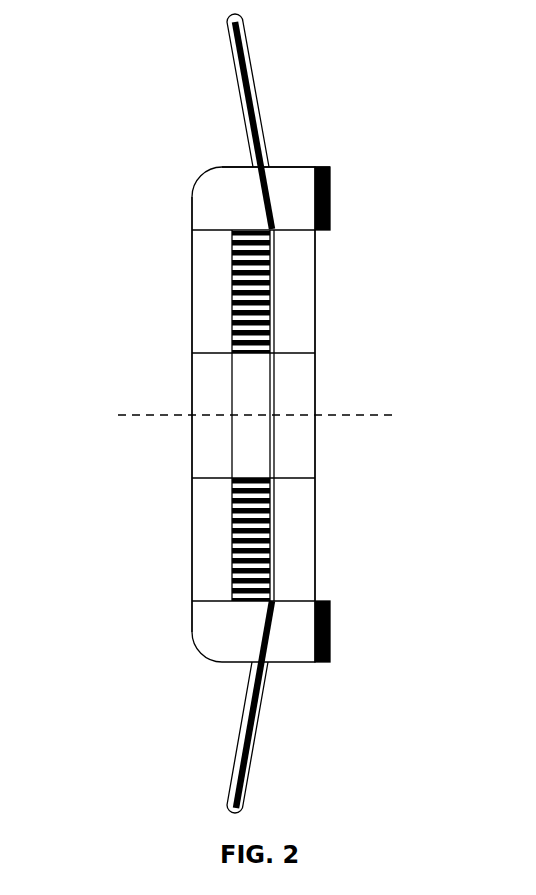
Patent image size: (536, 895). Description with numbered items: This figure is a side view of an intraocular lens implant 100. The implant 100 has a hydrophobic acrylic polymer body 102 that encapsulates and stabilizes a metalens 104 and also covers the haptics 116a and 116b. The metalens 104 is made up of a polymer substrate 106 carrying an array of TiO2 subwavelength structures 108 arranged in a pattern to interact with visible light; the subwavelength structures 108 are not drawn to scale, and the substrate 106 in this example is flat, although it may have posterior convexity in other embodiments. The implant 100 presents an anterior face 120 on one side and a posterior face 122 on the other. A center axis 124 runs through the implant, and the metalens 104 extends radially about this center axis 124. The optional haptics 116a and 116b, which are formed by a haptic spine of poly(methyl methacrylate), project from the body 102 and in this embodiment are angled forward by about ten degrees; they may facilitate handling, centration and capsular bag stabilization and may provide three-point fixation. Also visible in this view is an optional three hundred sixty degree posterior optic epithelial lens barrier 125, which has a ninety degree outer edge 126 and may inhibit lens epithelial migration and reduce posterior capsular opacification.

The IOL implant 100 is at (236, 413).
The hydrophobic acrylic polymer body 102 is at (256, 403).
The metalens 104 is at (288, 500).
The polymer substrate 106 is at (275, 258).
The subwavelength structures 108 is at (232, 308).
The haptic 116a is at (259, 98).
The haptic 116b is at (235, 783).
The anterior face 120 is at (181, 344).
The posterior face 122 is at (328, 344).
The center axis 124 is at (143, 417).
The posterior optic epithelial lens barrier 125 is at (331, 198).
The outer edge 126 is at (341, 159).